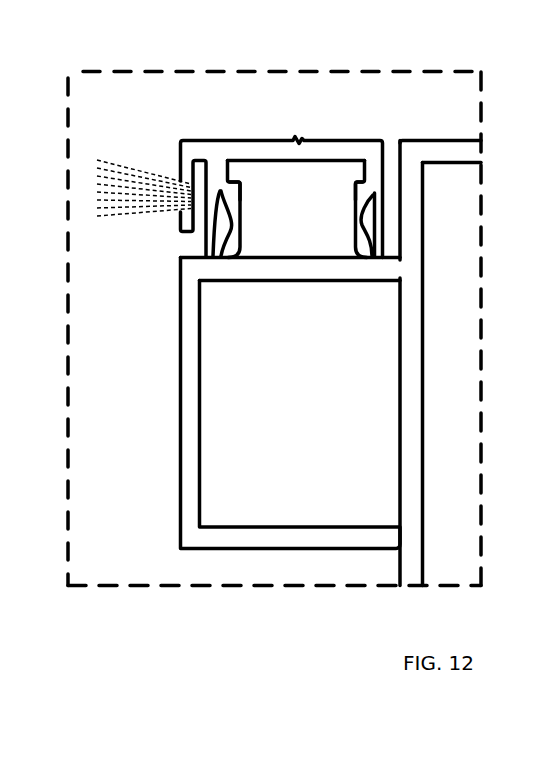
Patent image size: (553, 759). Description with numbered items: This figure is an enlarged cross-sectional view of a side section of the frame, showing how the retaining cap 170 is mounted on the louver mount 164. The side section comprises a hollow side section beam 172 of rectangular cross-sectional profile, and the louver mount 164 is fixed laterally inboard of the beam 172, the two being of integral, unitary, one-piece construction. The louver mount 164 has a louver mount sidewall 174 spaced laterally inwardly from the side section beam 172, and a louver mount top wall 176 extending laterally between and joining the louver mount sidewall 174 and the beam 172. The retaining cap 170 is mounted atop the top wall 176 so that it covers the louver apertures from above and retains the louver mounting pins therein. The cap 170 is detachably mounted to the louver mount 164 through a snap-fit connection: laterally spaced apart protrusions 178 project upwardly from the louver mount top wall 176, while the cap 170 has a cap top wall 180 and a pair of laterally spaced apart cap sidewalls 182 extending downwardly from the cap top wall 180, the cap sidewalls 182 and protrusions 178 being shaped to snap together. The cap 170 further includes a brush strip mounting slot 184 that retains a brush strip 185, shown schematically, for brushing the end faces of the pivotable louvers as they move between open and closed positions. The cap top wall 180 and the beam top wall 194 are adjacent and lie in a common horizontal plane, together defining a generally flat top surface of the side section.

The louver mount 164 is at (190, 568).
The retaining cap 170 is at (192, 110).
The side section beam 172 is at (423, 227).
The louver mount sidewall 174 is at (192, 413).
The louver mount top wall 176 is at (300, 268).
The protrusions 178 is at (229, 218).
The cap top wall 180 is at (282, 138).
The cap sidewalls 182 is at (207, 222).
The brush strip mounting slot 184 is at (176, 214).
The brush strip 185 is at (142, 170).
The beam top wall 194 is at (455, 153).